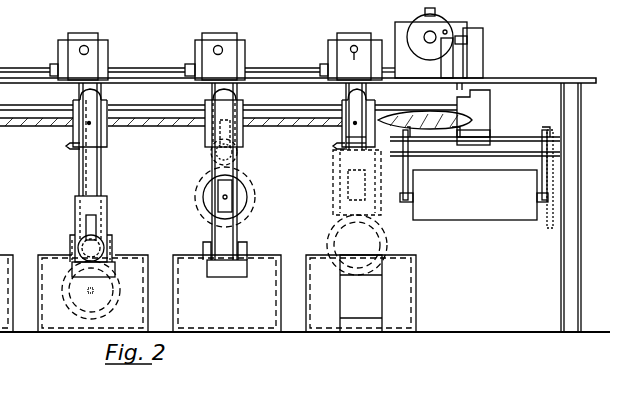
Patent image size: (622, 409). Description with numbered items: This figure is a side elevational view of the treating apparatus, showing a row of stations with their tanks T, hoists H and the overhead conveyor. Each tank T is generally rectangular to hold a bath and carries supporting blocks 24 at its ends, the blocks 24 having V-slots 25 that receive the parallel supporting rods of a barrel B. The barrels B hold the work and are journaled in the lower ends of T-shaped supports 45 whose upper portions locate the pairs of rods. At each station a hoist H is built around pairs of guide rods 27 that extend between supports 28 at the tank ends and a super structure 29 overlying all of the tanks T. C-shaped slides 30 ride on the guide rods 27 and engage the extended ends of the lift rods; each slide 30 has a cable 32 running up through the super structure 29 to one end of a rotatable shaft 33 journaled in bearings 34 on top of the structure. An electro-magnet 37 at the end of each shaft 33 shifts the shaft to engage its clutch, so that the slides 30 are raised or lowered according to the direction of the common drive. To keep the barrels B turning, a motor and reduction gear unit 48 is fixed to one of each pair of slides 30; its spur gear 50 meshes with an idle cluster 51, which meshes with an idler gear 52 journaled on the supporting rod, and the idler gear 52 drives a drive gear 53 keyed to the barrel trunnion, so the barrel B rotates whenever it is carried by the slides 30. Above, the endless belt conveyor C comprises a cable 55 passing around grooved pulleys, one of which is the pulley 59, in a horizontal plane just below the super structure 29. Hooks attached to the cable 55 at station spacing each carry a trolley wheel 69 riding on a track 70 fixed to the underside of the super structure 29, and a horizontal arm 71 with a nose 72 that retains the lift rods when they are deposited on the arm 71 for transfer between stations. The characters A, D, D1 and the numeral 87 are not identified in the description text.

The supporting blocks 24 is at (204, 252).
The V-slots 25 is at (215, 250).
The guide rods 27 is at (79, 181).
The supports 28 is at (225, 278).
The super structure 29 is at (29, 62).
The C-shaped slides 30 is at (76, 206).
The cable 32 is at (100, 162).
The rotatable shaft 33 is at (219, 46).
The bearings 34 is at (196, 47).
The electro-magnet 37 is at (214, 42).
The T-shaped supports 45 is at (105, 254).
The motor and reduction gear unit 48 is at (9, 178).
The spur gear 50 is at (238, 153).
The idle cluster 51 is at (78, 230).
The idler gear 52 is at (70, 246).
The drive gear 53 is at (70, 262).
The cable 55 is at (300, 122).
The grooved pulley 59 is at (448, 112).
The trolley wheel 69 is at (240, 101).
The track 70 is at (193, 106).
The arm 71 is at (85, 150).
The nose 72 is at (72, 145).
The motor 87 is at (440, 22).
The station A is at (52, 18).
The barrels B is at (254, 194).
The endless belt conveyor C is at (292, 126).
The drive unit D is at (484, 34).
The drive unit part D1 is at (447, 50).
The hoists H is at (106, 188).
The tanks T is at (262, 328).